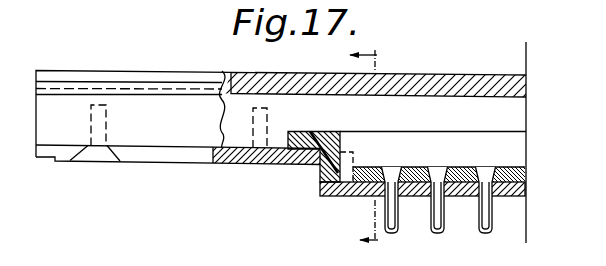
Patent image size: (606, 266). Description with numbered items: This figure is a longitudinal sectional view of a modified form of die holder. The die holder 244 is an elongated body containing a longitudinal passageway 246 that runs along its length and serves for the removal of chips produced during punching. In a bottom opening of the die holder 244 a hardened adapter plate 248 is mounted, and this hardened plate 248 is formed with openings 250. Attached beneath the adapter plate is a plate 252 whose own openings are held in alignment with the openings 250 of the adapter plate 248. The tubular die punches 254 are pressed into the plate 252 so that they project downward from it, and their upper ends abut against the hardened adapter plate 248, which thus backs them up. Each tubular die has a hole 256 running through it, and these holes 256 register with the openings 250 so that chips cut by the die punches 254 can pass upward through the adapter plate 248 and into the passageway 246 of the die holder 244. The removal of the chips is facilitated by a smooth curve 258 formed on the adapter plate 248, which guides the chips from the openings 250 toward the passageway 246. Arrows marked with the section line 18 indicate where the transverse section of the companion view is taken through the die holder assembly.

The section line 18 is at (375, 152).
The die holder 244 is at (252, 80).
The longitudinal passageway 246 is at (487, 107).
The hardened adapter plate 248 is at (320, 174).
The openings 250 is at (392, 173).
The plate 252 is at (328, 197).
The die punches 254 is at (398, 211).
The holes 256 is at (393, 229).
The smooth curve 258 is at (328, 140).